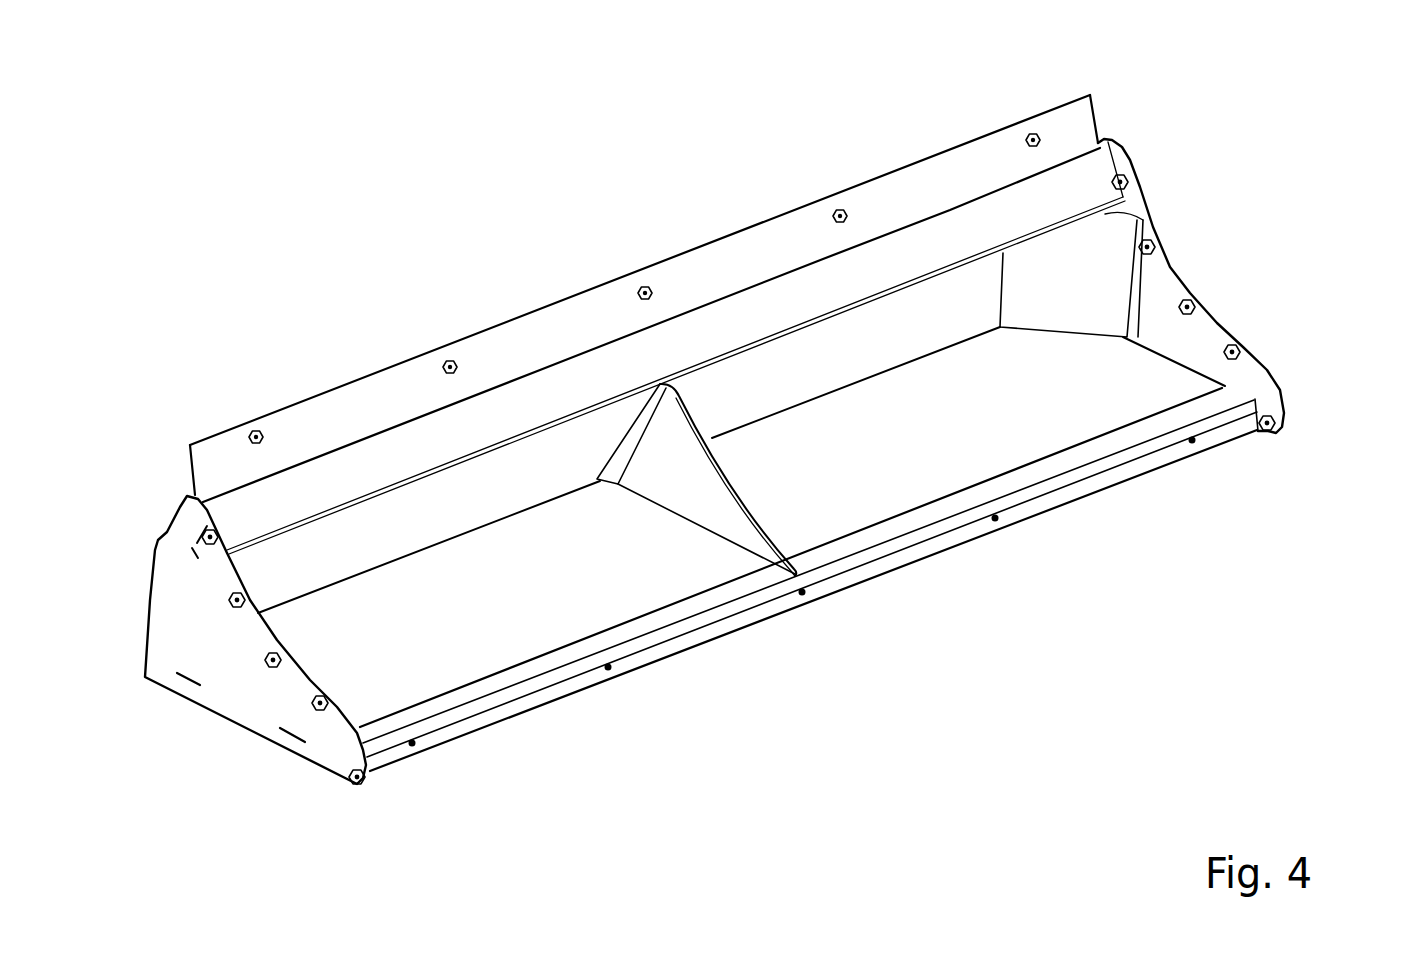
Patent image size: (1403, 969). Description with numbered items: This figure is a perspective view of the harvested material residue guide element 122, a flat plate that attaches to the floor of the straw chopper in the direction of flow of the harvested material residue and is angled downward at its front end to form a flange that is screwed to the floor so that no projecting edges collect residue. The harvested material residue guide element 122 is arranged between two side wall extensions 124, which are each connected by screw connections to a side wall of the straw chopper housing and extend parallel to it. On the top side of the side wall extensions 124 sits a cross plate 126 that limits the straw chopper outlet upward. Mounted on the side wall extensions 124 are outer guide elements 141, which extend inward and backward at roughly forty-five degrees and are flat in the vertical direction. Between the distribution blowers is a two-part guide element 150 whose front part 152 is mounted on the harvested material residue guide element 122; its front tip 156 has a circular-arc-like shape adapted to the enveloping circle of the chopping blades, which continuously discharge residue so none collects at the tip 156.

The harvested material residue guide element 122 is at (512, 258).
The side wall extensions 124 is at (237, 697).
The cross plate 126 is at (327, 418).
The outer guide elements 141 is at (1092, 263).
The two-part guide element 150 is at (836, 627).
The front part 152 is at (673, 477).
The front tip 156 is at (740, 493).